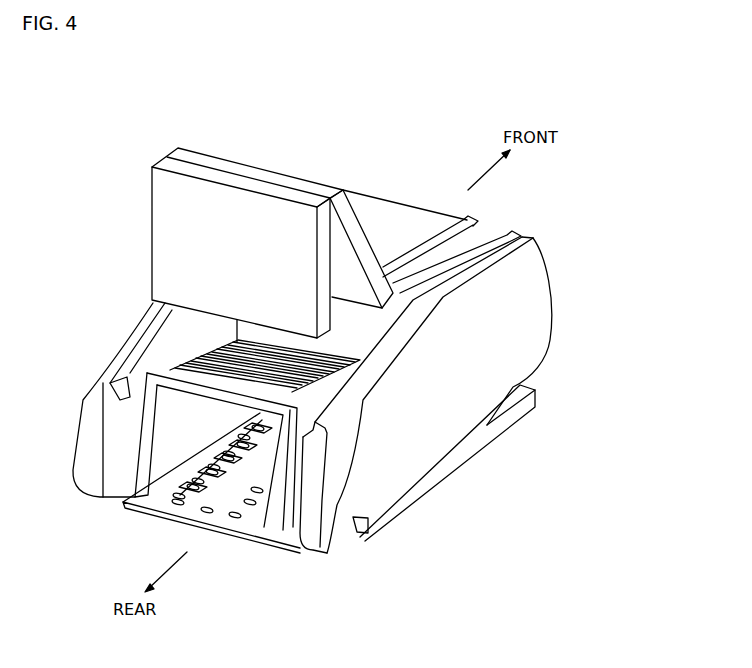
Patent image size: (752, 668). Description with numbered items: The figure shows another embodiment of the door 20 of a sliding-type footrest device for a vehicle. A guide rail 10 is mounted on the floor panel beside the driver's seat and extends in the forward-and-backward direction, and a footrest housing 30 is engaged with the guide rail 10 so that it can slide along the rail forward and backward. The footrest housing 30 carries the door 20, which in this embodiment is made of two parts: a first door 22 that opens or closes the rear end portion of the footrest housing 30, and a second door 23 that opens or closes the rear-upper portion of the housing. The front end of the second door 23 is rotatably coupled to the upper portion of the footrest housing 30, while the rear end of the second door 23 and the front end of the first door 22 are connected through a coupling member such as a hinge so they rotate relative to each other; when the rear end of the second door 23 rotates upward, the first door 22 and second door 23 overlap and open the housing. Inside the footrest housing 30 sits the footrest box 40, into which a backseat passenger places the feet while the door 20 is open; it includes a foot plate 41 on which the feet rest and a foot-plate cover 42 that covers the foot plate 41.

The guide rail 10 is at (440, 473).
The door 20 is at (273, 209).
The first door 22 is at (177, 225).
The second door 23 is at (347, 210).
The footrest housing 30 is at (537, 327).
The footrest box 40 is at (130, 453).
The foot plate 41 is at (160, 502).
The foot-plate cover 42 is at (193, 373).